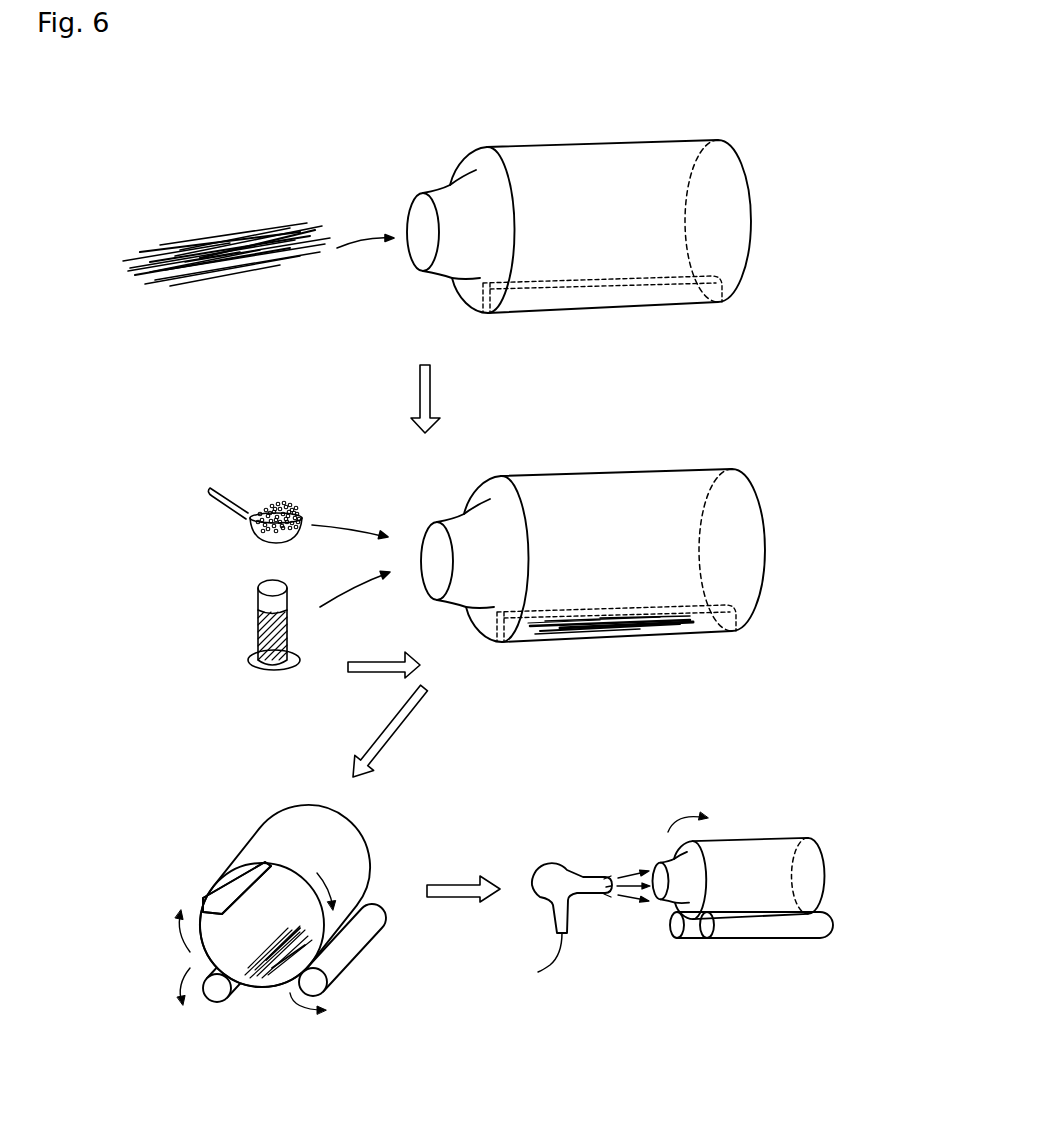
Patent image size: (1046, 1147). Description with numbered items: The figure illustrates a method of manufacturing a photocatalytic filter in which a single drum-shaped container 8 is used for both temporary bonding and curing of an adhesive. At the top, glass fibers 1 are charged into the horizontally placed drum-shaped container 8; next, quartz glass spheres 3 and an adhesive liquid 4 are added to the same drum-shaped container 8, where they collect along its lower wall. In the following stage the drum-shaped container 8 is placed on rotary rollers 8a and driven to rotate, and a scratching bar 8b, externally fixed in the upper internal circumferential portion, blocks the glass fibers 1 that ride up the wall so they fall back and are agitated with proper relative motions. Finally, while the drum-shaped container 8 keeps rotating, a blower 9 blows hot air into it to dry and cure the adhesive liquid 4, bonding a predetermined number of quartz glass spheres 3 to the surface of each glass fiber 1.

The glass fibers 1 is at (220, 233).
The quartz glass spheres 3 is at (272, 502).
The adhesive liquid 4 is at (258, 622).
The drum-shaped container 8 is at (603, 142).
The rotary rollers 8a is at (222, 995).
The scratching bar 8b is at (222, 897).
The blower 9 is at (545, 897).